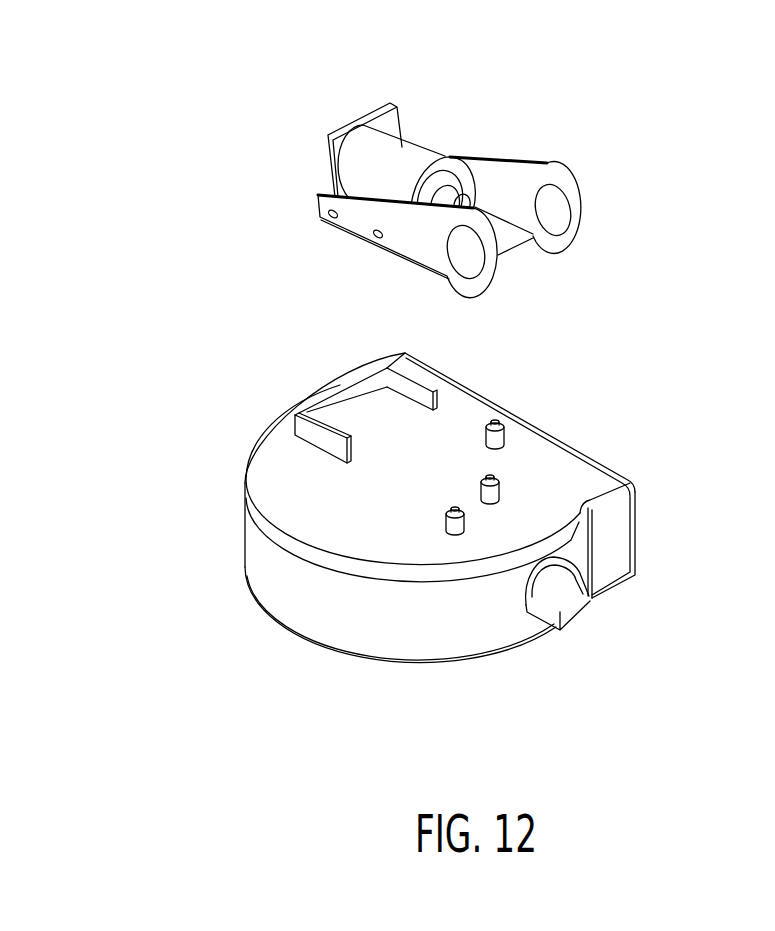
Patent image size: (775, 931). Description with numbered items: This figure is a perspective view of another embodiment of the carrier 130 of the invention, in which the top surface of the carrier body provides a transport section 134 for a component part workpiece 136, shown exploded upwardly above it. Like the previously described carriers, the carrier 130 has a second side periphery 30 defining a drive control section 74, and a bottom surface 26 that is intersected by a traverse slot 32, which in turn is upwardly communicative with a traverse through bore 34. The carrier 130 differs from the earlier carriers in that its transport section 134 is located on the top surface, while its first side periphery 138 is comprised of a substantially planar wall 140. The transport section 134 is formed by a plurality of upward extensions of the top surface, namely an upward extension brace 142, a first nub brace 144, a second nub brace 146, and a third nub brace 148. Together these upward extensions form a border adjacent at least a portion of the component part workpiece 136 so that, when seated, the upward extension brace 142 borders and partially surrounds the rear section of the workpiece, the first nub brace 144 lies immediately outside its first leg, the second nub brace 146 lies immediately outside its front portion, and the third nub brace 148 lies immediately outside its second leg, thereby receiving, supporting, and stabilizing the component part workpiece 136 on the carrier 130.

The component part workpiece 136 is at (523, 158).
The carrier 130 is at (423, 521).
The second side periphery 30 is at (423, 521).
The first side periphery 138 is at (453, 363).
The upward extension brace 142 is at (405, 375).
The transport section 134 is at (370, 417).
The third nub brace 148 is at (498, 438).
The second nub brace 146 is at (498, 493).
The first nub brace 144 is at (455, 532).
The substantially planar wall 140 is at (637, 537).
The traverse through bore 34 is at (547, 585).
The traverse slot 32 is at (548, 628).
The bottom surface 26 is at (478, 657).
The drive control section 74 is at (300, 603).